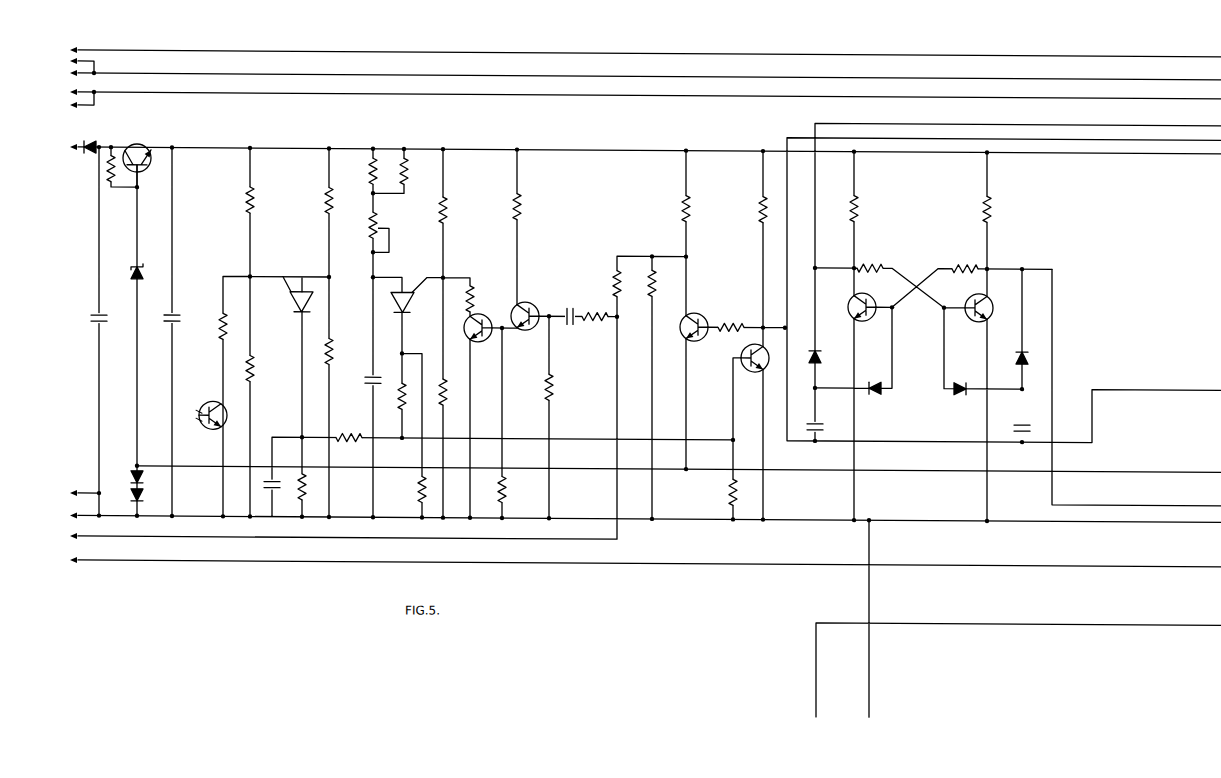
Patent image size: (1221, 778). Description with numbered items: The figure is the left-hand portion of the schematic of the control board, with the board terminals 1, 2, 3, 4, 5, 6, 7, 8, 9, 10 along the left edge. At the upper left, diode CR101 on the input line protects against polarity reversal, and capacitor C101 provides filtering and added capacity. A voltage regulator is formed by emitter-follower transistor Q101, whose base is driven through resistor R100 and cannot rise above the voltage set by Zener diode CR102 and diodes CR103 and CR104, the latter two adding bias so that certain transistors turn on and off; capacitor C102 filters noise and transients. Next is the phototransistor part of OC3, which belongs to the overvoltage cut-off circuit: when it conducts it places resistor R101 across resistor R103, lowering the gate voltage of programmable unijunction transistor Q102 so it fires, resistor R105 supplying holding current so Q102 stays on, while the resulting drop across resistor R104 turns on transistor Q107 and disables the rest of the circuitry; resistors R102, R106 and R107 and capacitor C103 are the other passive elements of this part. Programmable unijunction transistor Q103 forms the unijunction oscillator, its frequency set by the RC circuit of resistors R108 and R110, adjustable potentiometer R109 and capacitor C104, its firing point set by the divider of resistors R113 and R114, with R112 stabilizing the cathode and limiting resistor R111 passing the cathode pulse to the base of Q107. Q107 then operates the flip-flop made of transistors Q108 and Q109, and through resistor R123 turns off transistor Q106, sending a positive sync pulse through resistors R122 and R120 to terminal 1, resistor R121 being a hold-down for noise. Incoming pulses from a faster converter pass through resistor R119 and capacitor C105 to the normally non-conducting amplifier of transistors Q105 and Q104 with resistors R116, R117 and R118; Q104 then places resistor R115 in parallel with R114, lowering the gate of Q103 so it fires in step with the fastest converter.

The terminal No. 1 is at (63, 536).
The terminal No. 2 is at (67, 50).
The terminal No. 3 is at (63, 560).
The terminal No. 4 is at (67, 61).
The terminal No. 5 is at (67, 73).
The terminal No. 6 is at (67, 92).
The terminal No. 7 is at (67, 105).
The terminal No. 8 is at (67, 147).
The terminal No. 9 is at (63, 493).
The terminal No. 10 is at (60, 515).
The diode CR101 is at (92, 139).
The Zener diode CR102 is at (123, 267).
The diode CR103 is at (123, 469).
The diode CR104 is at (123, 491).
The transistor Q101 is at (140, 157).
The programmable unijunction transistor Q102 is at (283, 303).
The programmable unijunction transistor Q103 is at (412, 304).
The transistor Q104 is at (482, 338).
The transistor Q105 is at (534, 306).
The transistor Q106 is at (700, 316).
The transistor Q107 is at (741, 354).
The transistor Q108 is at (845, 303).
The transistor Q109 is at (964, 301).
The phototransistor part of OC3 is at (206, 409).
The resistor R100 is at (89, 168).
The resistor R101 is at (209, 326).
The resistor R102 is at (266, 200).
The resistor R103 is at (266, 368).
The resistor R104 is at (312, 487).
The resistor R105 is at (312, 202).
The resistor R106 is at (344, 351).
The resistor R107 is at (350, 430).
The resistor R108 is at (356, 171).
The adjustable potentiometer R109 is at (356, 225).
The resistor R110 is at (419, 171).
The limiting resistor R111 is at (389, 396).
The stabilizing resistor R112 is at (406, 489).
The resistor R113 is at (459, 210).
The resistor R114 is at (454, 393).
The resistor R115 is at (486, 299).
The resistor R116 is at (534, 207).
The resistor R117 is at (517, 489).
The resistor R118 is at (565, 387).
The resistor R119 is at (594, 325).
The resistor R120 is at (603, 284).
The hold-down resistor R121 is at (667, 283).
The resistor R122 is at (669, 208).
The resistor R123 is at (731, 318).
The capacitor C101 is at (83, 318).
The capacitor C102 is at (186, 312).
The capacitor C103 is at (264, 489).
The capacitor C104 is at (357, 381).
The capacitor C105 is at (571, 311).